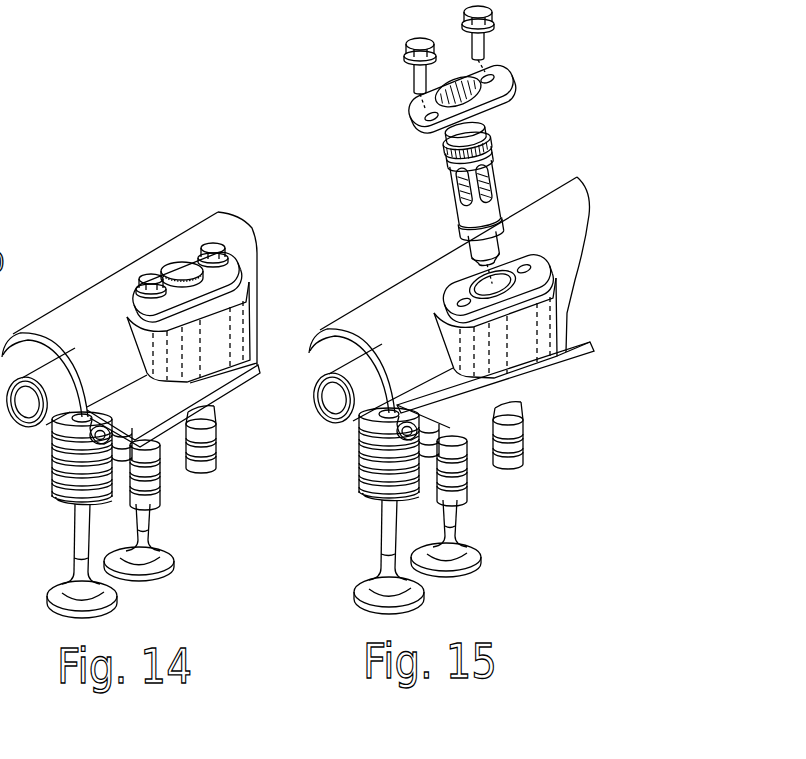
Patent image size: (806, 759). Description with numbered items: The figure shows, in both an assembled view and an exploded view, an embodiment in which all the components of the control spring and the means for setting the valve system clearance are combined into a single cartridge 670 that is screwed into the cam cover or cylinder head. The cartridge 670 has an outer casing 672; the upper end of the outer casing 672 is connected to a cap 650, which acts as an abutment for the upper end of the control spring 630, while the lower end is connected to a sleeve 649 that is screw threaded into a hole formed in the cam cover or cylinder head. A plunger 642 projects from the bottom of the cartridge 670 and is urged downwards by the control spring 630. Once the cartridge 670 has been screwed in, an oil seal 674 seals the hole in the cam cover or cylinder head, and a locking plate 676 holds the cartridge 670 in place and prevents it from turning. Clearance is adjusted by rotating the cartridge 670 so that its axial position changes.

In FIG. 15, the control spring 630 is at (476, 195).
In FIG. 15, the plunger 642 is at (486, 258).
In FIG. 15, the sleeve 649 is at (481, 230).
In FIG. 14, the cap 650 is at (181, 266).
In FIG. 15, the cap 650 is at (465, 134).
In FIG. 15, the cartridge 670 is at (525, 198).
In FIG. 15, the outer casing 672 is at (470, 160).
In FIG. 15, the oil seal 674 is at (468, 145).
In FIG. 14, the locking plate 676 is at (234, 276).
In FIG. 15, the locking plate 676 is at (506, 70).